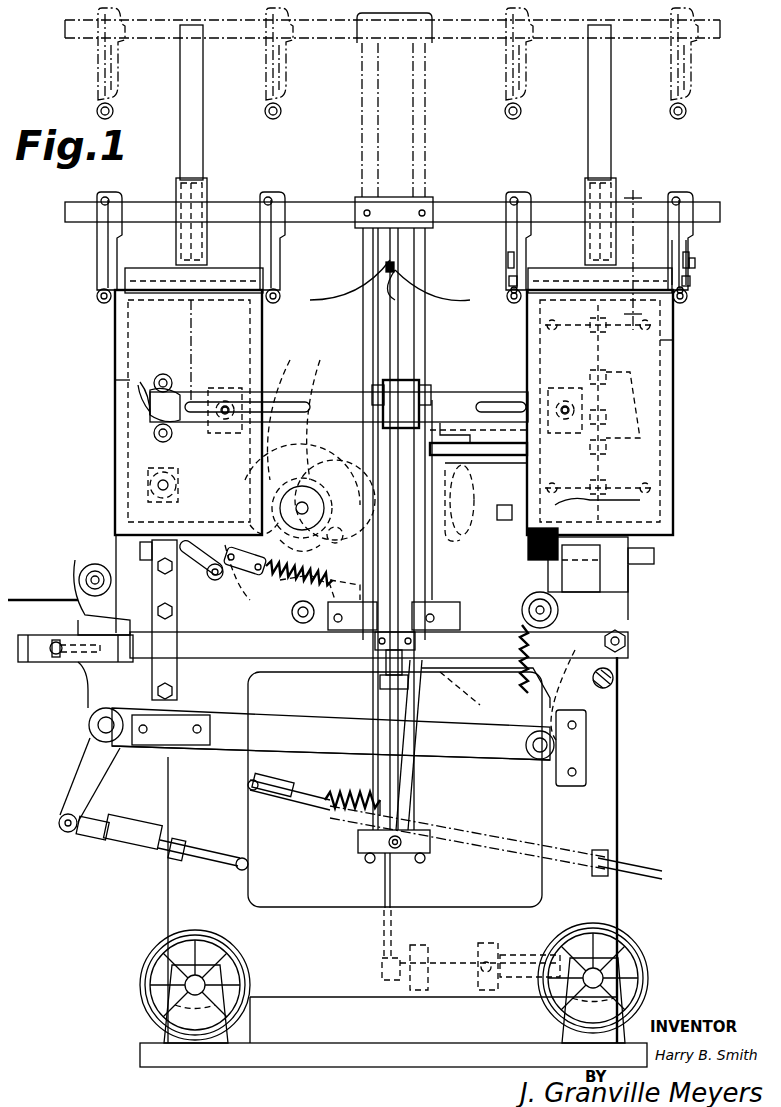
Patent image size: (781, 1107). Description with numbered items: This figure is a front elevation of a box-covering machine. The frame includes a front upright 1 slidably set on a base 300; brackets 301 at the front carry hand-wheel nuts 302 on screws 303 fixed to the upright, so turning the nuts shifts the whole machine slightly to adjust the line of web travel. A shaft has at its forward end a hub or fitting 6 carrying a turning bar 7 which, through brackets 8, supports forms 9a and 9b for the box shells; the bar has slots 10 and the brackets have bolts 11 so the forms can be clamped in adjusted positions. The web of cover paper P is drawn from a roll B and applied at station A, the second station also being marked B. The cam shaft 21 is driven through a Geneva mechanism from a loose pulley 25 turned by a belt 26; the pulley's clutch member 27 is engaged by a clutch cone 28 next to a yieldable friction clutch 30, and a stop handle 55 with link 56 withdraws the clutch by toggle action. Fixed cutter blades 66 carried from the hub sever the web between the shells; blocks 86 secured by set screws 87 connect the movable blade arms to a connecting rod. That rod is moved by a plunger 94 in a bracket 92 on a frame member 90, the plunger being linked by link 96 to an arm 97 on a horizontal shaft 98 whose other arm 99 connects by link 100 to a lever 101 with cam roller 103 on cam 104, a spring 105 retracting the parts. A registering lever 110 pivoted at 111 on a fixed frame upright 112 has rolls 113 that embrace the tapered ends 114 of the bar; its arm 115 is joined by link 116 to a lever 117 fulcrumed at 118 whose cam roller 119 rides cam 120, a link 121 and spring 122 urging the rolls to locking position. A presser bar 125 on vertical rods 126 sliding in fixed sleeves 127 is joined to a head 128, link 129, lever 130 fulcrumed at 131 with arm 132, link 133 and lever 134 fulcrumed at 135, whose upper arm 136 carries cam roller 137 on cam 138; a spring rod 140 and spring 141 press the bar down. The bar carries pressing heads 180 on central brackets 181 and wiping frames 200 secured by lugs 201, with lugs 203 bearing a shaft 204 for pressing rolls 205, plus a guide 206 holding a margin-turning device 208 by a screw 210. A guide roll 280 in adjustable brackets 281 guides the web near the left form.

The front upright 1 is at (608, 810).
The hub or fitting 6 is at (633, 251).
The form support or turning bar 7 is at (460, 400).
The bracket 8 is at (228, 388).
The form 9a is at (120, 410).
The form 9b is at (665, 373).
The slots 10 is at (191, 150).
The bolts 11 is at (222, 400).
The cam shaft 21 is at (290, 500).
The loose pulley 25 is at (630, 595).
The belt 26 is at (625, 622).
The clutch member 27 is at (600, 563).
The clutch cone 28 is at (580, 575).
The friction clutch 30 is at (660, 498).
The handle 55 is at (615, 662).
The link 56 is at (622, 620).
The fixed cutter blade 66 is at (388, 302).
The blocks 86 is at (420, 200).
The set screws 87 is at (385, 268).
The horizontal frame member 90 is at (140, 658).
The bracket 92 is at (415, 655).
The plunger 94 is at (402, 680).
The link 96 is at (408, 712).
The arm 97 is at (512, 738).
The horizontal shaft 98 is at (538, 752).
The arm 99 is at (590, 722).
The link 100 is at (530, 672).
The lever 101 is at (285, 590).
The cam roller 103 is at (372, 395).
The cam 104 is at (385, 395).
The spring 105 is at (615, 690).
The registering lever 110 is at (150, 400).
The pivot 111 is at (148, 487).
The fixed frame upright 112 is at (155, 552).
The rolls 113 is at (165, 375).
The beveled or tapered ends 114 is at (142, 383).
The arm 115 is at (150, 480).
The link 116 is at (160, 568).
The lever 117 is at (275, 535).
The fulcrum 118 is at (295, 500).
The cam roller 119 is at (279, 411).
The cam 120 is at (319, 411).
The link 121 is at (250, 578).
The spring 122 is at (379, 620).
The presser bar 125 is at (478, 205).
The vertical rods 126 is at (420, 262).
The fixed sleeves 127 is at (432, 385).
The head 128 is at (412, 860).
The link 129 is at (405, 790).
The lever 130 is at (343, 745).
The fulcrum 131 is at (98, 724).
The arm 132 is at (80, 772).
The link 133 is at (135, 845).
The lever 134 is at (268, 778).
The fulcrum 135 is at (303, 624).
The upper arm 136 is at (248, 600).
The cam roller 137 is at (245, 530).
The cam 138 is at (248, 470).
The spring rod 140 is at (656, 865).
The spring 141 is at (345, 810).
The pressing head 180 is at (180, 268).
The central bracket 181 is at (205, 183).
The body or frame 200 is at (690, 248).
The lug 201 is at (114, 200).
The lugs 203 is at (508, 280).
The shaft 204 is at (510, 290).
The pressing roll 205 is at (114, 111).
The horizontal guide 206 is at (507, 258).
The margin-turning and pressing device 208 is at (676, 248).
The screw 210 is at (696, 263).
The guide roll 280 is at (80, 566).
The adjustable brackets 281 is at (78, 598).
The base 300 is at (392, 1067).
The brackets 301 is at (225, 1025).
The nuts 302 is at (245, 970).
The screws 303 is at (185, 985).
The station A is at (103, 373).
The roll of cover paper B is at (685, 370).
The web of cover paper P is at (300, 300).